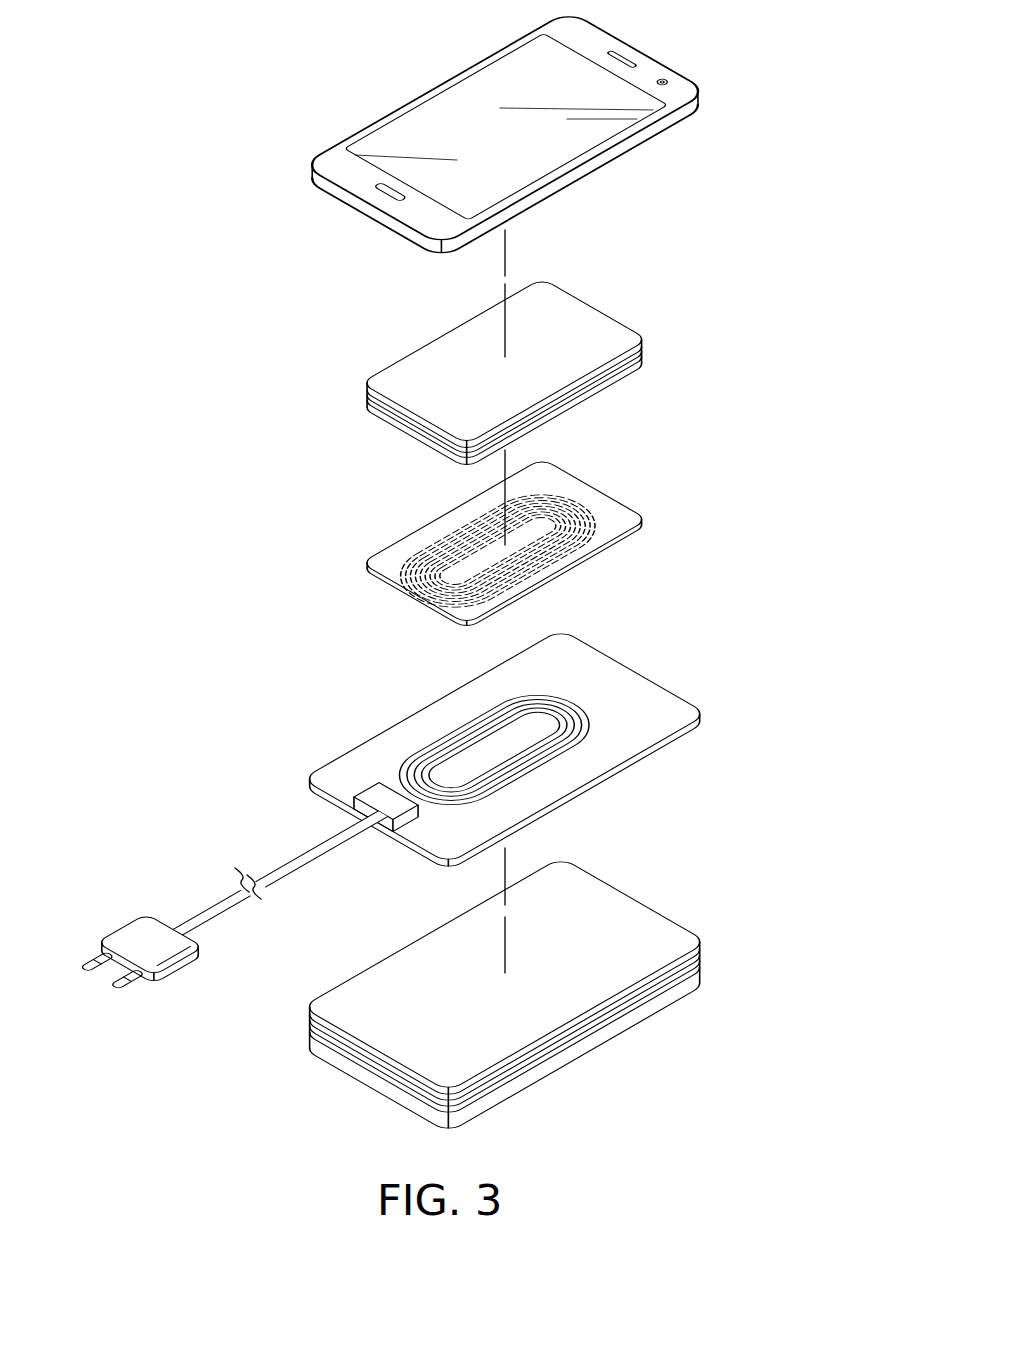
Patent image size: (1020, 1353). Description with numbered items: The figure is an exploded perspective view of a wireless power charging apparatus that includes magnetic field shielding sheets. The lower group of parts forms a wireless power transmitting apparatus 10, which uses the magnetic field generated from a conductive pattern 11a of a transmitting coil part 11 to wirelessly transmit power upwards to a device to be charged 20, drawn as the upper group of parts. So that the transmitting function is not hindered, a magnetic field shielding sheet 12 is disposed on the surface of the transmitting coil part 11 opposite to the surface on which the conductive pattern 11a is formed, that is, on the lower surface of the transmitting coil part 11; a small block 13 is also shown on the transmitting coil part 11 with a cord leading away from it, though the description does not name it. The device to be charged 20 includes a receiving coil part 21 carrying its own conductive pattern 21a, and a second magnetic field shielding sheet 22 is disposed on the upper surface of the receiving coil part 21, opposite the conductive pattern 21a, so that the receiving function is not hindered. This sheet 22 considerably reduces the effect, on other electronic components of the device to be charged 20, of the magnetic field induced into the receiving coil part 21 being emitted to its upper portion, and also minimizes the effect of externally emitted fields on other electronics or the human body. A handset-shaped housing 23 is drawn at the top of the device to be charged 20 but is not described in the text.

The wireless power transmitting apparatus 10 is at (753, 640).
The transmitting coil part 11 is at (656, 674).
The conductive pattern 11a is at (573, 686).
The magnetic field shielding sheet 12 is at (656, 900).
The connector with power cable and plug 13 is at (430, 821).
The device to be charged 20 is at (221, 111).
The receiving coil part 21 is at (355, 545).
The conductive pattern 21a is at (420, 598).
The magnetic field shielding sheet 22 is at (355, 364).
The portable terminal (mobile phone) 23 is at (296, 142).